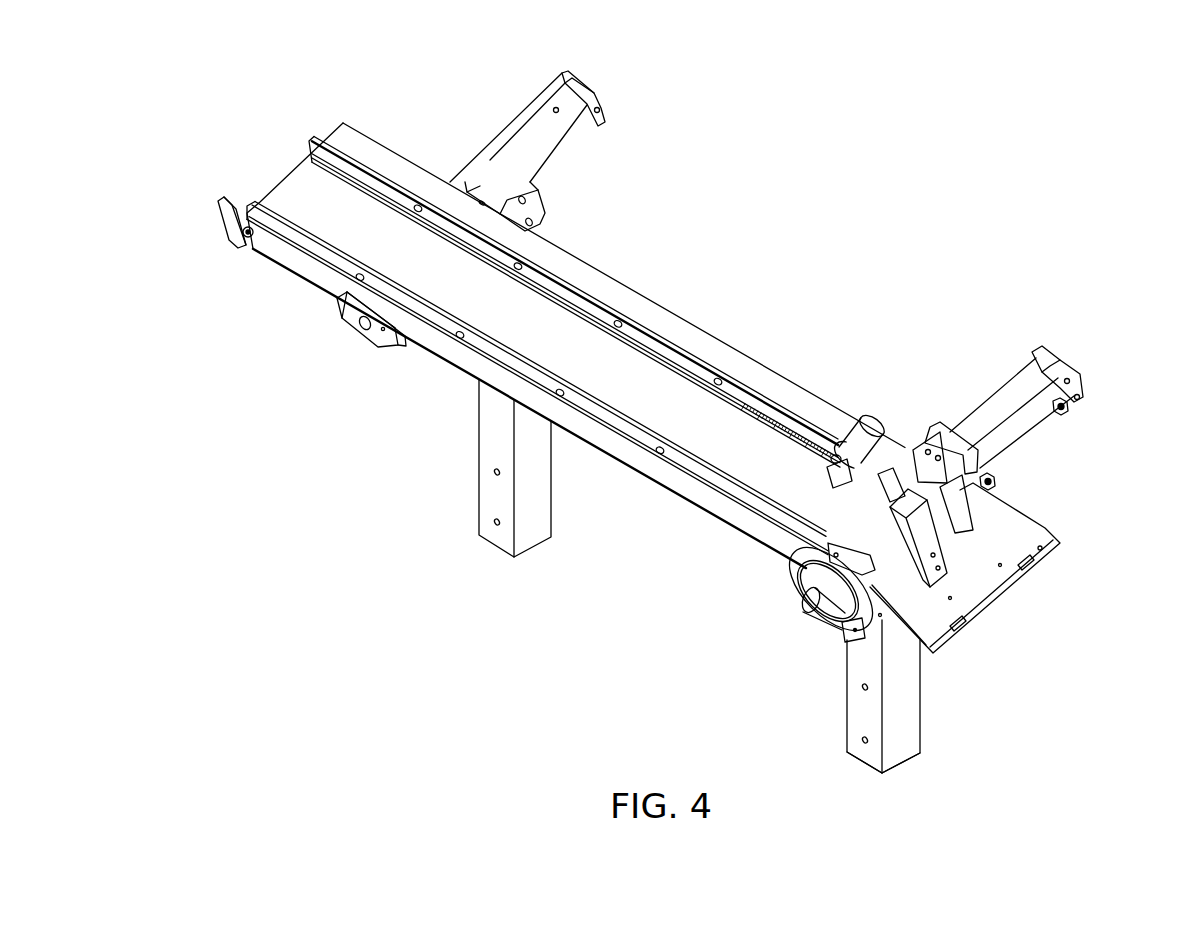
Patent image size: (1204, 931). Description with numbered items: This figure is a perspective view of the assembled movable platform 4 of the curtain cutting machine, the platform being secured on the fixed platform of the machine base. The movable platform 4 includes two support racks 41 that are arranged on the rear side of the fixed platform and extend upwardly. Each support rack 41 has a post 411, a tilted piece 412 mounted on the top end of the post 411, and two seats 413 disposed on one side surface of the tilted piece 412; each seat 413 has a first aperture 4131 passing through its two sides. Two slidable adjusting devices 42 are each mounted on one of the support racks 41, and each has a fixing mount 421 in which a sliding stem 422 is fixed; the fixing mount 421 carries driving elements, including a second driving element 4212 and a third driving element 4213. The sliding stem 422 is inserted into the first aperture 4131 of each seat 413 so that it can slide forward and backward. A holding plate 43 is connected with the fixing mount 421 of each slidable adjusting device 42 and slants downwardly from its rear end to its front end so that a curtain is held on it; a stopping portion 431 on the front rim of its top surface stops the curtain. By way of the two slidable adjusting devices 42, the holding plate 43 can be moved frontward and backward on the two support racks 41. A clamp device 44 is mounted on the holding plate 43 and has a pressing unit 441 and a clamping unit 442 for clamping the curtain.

The movable platform 4 is at (968, 440).
The support rack 41 is at (558, 510).
The post 411 is at (902, 755).
The tilted piece 412 is at (342, 304).
The seat 413 is at (352, 315).
The first aperture 4131 is at (362, 330).
The slidable adjusting device 42 is at (585, 88).
The fixing mount 421 is at (1040, 433).
The sliding stem 422 is at (1022, 398).
The second driving element 4212 is at (993, 483).
The third driving element 4213 is at (1073, 408).
The holding plate 43 is at (637, 366).
The stopping portion 431 is at (228, 222).
The clamp device 44 is at (947, 423).
The pressing unit 441 is at (890, 445).
The clamping unit 442 is at (920, 523).